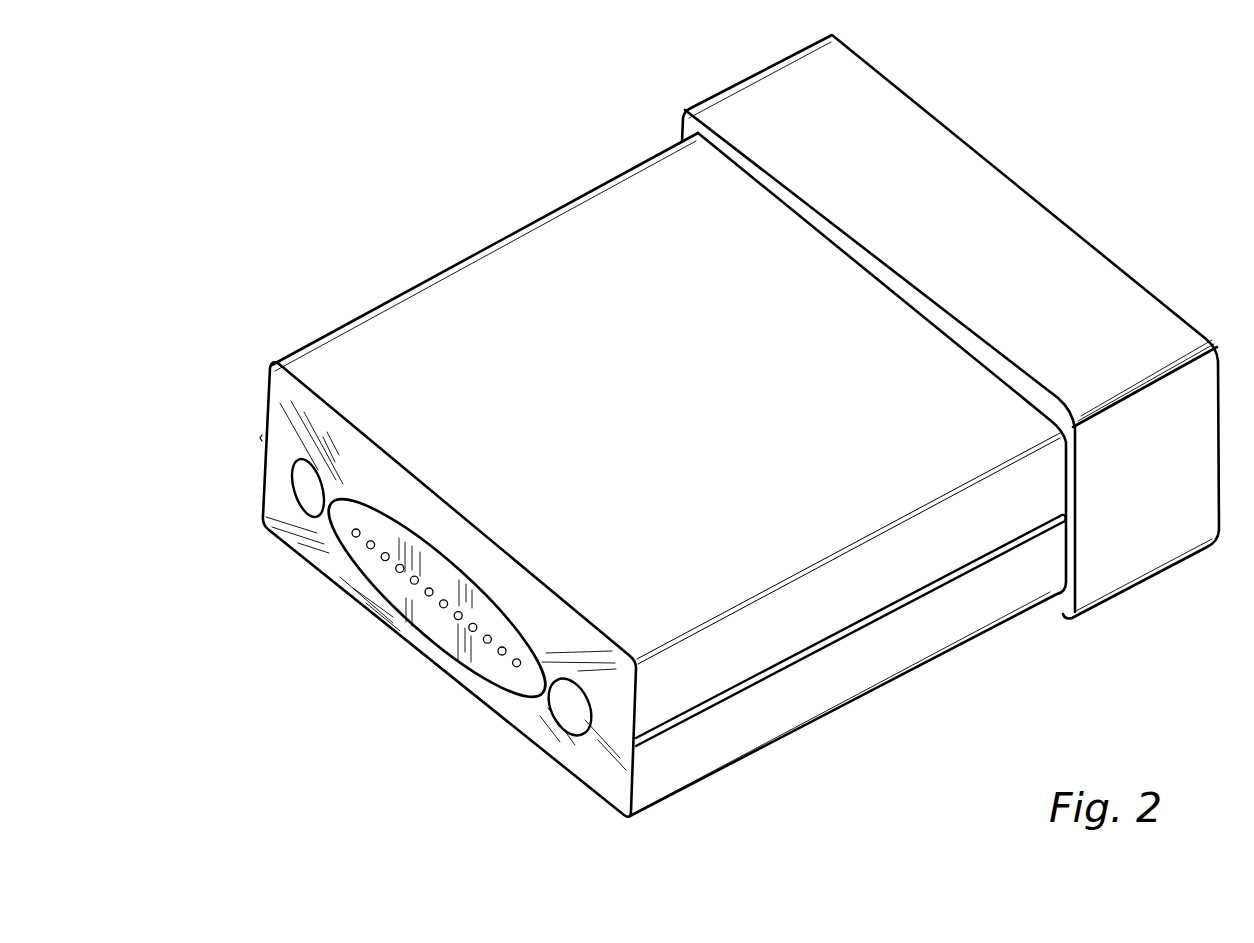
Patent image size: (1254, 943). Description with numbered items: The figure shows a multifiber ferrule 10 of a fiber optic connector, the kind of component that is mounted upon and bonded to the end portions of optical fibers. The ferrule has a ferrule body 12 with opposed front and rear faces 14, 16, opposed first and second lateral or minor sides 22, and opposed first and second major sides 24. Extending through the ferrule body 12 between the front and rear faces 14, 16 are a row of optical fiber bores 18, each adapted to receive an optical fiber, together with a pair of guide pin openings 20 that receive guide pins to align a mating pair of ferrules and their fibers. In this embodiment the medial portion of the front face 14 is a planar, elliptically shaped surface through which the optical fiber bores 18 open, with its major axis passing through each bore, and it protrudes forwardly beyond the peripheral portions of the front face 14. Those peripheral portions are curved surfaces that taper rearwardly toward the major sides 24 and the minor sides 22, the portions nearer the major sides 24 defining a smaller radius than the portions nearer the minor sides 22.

The ferrule 10 is at (704, 434).
The ferrule body 12 is at (643, 203).
The front face 14 is at (345, 452).
The rear face 16 is at (1060, 219).
The optical fiber bore 18 is at (443, 607).
The guide pin opening 20 is at (570, 714).
The minor side 22 is at (262, 493).
The major side 24 is at (355, 603).